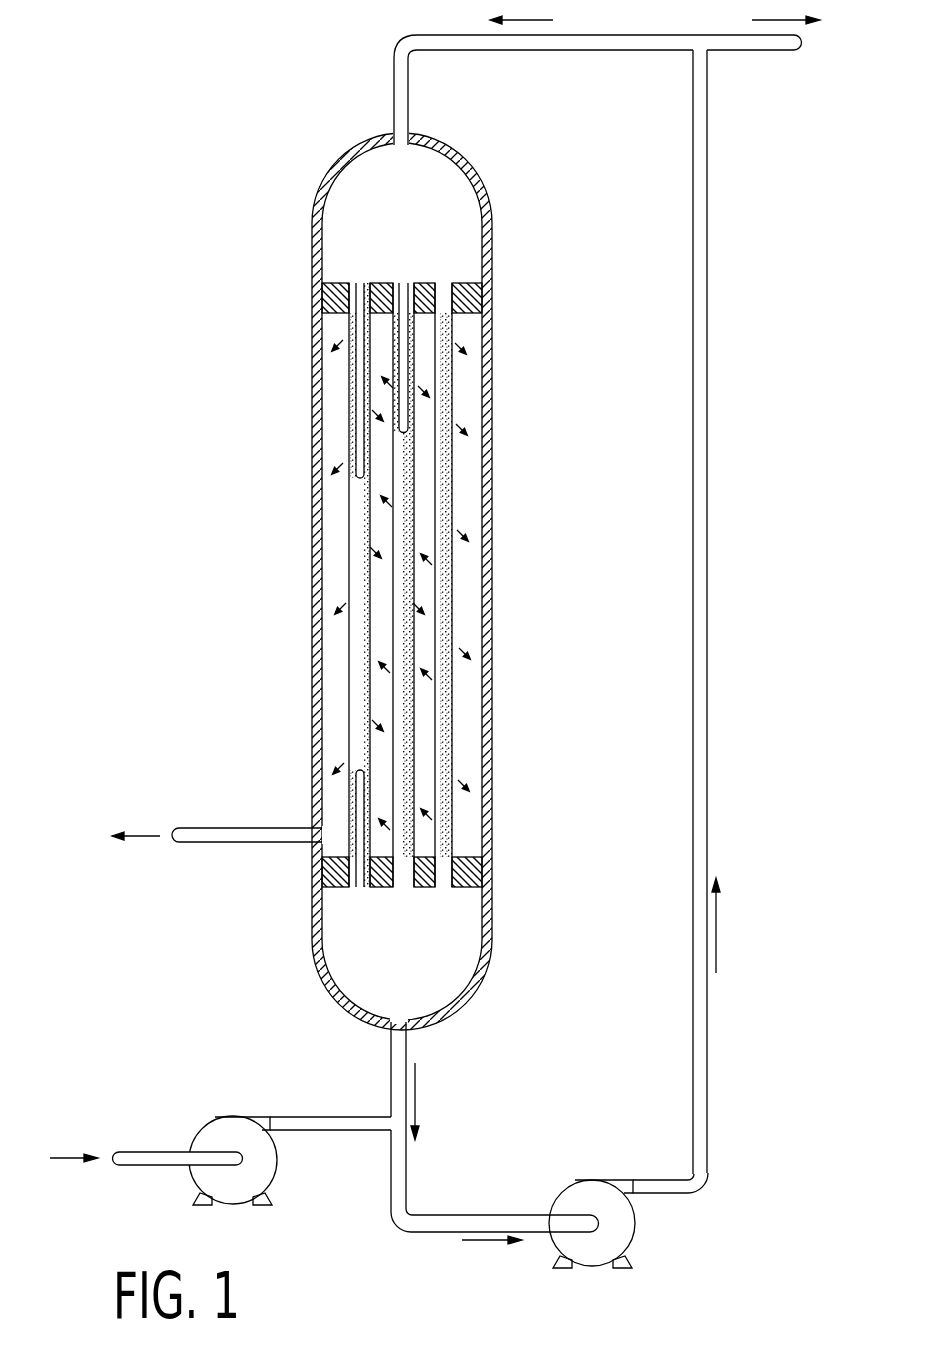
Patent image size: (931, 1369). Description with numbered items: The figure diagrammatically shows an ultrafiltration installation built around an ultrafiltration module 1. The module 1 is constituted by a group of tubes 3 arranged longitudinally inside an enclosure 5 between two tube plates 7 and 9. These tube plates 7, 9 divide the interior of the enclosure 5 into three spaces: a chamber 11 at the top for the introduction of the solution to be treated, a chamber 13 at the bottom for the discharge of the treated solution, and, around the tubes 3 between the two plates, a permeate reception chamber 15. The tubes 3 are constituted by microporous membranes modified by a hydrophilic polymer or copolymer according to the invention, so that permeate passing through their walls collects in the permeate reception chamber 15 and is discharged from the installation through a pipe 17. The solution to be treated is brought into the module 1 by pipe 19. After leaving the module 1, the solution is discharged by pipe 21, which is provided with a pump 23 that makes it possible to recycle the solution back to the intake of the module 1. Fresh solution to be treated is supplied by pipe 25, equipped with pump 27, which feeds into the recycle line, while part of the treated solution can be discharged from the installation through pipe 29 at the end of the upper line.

The ultrafiltration module 1 is at (406, 581).
The tubes 3 is at (402, 518).
The enclosure 5 is at (488, 452).
The tube plate 7 is at (326, 300).
The tube plate 9 is at (330, 877).
The chamber for the introduction of the solution to be treated 11 is at (368, 205).
The chamber for the discharge of the treated solution 13 is at (433, 935).
The permeate reception chamber 15 is at (335, 652).
The pipe 17 is at (236, 834).
The pipe 19 is at (568, 42).
The pipe 21 is at (470, 1222).
The pump 23 is at (588, 1194).
The pipe 25 is at (138, 1157).
The pump 27 is at (231, 1126).
The pipe 29 is at (776, 45).